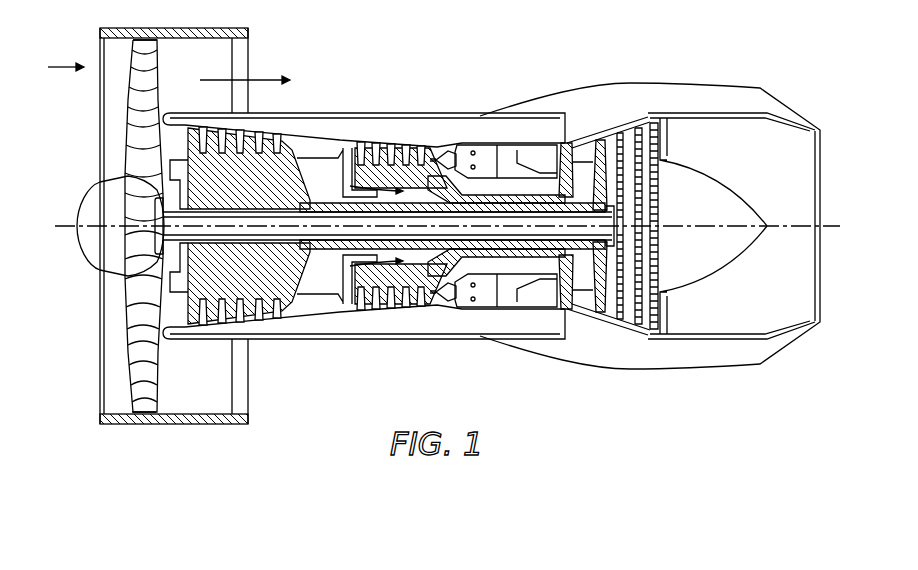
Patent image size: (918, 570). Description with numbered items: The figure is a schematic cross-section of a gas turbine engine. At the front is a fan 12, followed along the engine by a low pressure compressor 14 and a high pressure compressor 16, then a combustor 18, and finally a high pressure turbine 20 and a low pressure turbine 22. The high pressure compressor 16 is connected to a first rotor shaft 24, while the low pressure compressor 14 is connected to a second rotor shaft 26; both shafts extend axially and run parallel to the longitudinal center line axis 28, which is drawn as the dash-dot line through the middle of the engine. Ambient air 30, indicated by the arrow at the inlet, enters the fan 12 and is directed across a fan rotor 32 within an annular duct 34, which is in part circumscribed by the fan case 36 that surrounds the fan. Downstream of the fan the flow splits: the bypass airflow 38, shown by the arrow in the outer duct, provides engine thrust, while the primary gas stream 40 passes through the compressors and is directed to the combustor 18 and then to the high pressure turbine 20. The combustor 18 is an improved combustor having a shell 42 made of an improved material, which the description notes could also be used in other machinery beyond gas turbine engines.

The fan 12 is at (121, 115).
The low pressure compressor 14 is at (273, 172).
The high pressure compressor 16 is at (395, 302).
The combustor 18 is at (483, 303).
The high pressure turbine 20 is at (563, 145).
The low pressure turbine 22 is at (660, 130).
The first rotor shaft 24 is at (503, 267).
The second rotor shaft 26 is at (585, 270).
The longitudinal center line axis 28 is at (838, 226).
The ambient air 30 is at (68, 62).
The fan rotor 32 is at (143, 402).
The annular duct 34 is at (233, 387).
The fan case 36 is at (190, 425).
The bypass airflow 38 is at (277, 76).
The primary gas stream 40 is at (347, 150).
The shell 42 is at (481, 143).